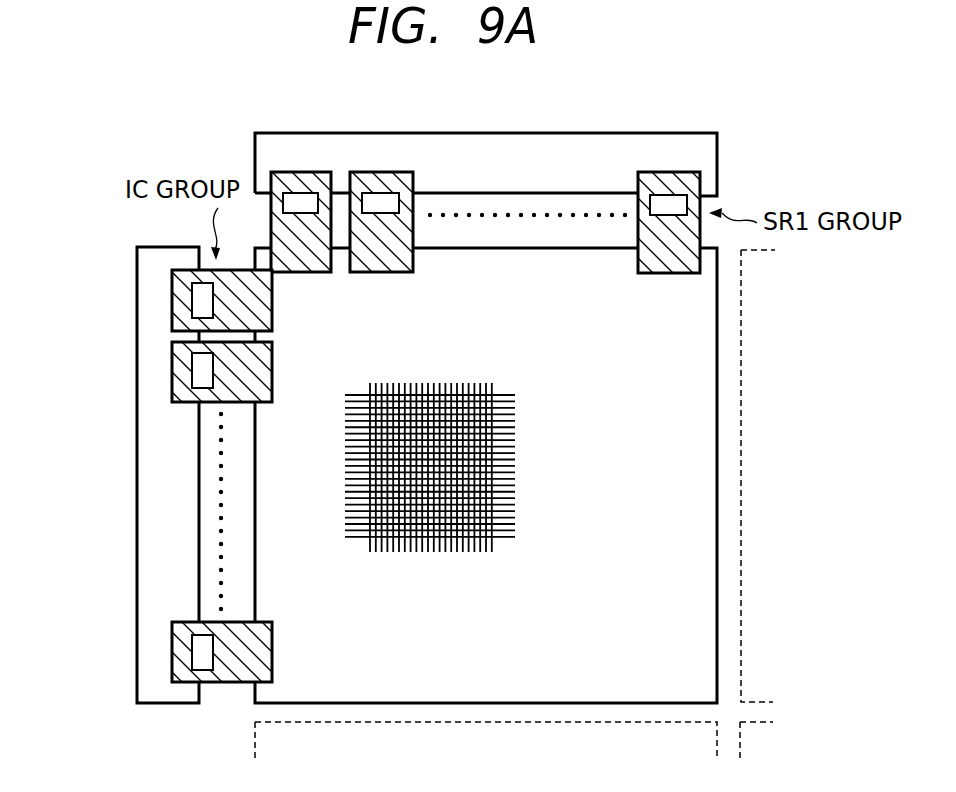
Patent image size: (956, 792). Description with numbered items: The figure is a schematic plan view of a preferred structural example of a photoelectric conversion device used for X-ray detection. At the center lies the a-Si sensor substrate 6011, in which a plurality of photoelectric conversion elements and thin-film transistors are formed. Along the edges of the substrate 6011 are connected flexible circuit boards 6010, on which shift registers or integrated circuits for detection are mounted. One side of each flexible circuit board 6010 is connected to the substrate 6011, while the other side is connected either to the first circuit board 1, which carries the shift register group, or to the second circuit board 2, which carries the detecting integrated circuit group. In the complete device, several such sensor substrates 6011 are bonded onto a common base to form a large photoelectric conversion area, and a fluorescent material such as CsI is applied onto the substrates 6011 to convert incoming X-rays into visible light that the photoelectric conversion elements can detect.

The flexible circuit board 6010 is at (683, 178).
The a-Si sensor substrate 6011 is at (690, 505).
The circuit board PCB1 1 is at (486, 175).
The circuit board PCB2 2 is at (180, 475).